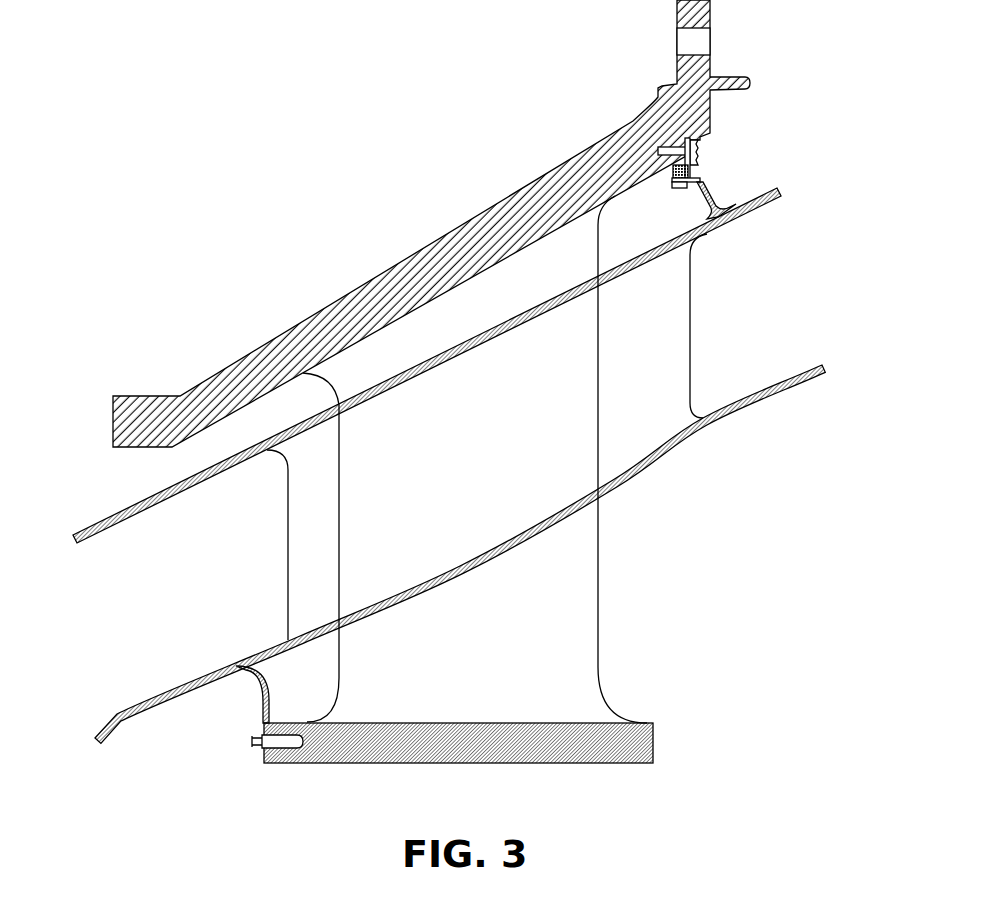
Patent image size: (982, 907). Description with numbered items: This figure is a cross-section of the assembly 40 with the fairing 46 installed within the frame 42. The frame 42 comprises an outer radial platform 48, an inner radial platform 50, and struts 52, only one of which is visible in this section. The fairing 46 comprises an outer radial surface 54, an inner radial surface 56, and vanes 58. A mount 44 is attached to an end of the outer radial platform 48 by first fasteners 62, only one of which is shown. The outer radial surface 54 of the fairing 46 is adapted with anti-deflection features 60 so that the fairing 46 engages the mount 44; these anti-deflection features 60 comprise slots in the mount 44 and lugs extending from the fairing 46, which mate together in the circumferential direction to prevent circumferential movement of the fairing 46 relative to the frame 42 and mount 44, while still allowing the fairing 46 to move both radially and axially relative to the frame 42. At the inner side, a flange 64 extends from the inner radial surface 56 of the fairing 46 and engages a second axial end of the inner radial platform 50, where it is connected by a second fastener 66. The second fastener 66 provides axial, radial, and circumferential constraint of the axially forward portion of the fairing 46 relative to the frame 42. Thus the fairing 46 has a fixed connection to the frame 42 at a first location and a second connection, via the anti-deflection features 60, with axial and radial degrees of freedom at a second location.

The assembly 40 is at (268, 173).
The frame 42 is at (466, 196).
The mount 44 is at (692, 168).
The fairing 46 is at (822, 390).
The outer radial platform 48 is at (410, 275).
The inner radial platform 50 is at (640, 737).
The struts 52 is at (572, 618).
The outer radial surface 54 is at (767, 197).
The inner radial surface 56 is at (750, 410).
The vanes 58 is at (690, 313).
The anti-deflection features 60 is at (772, 178).
The first fasteners 62 is at (698, 145).
The flange 64 is at (250, 663).
The second fastener 66 is at (233, 744).